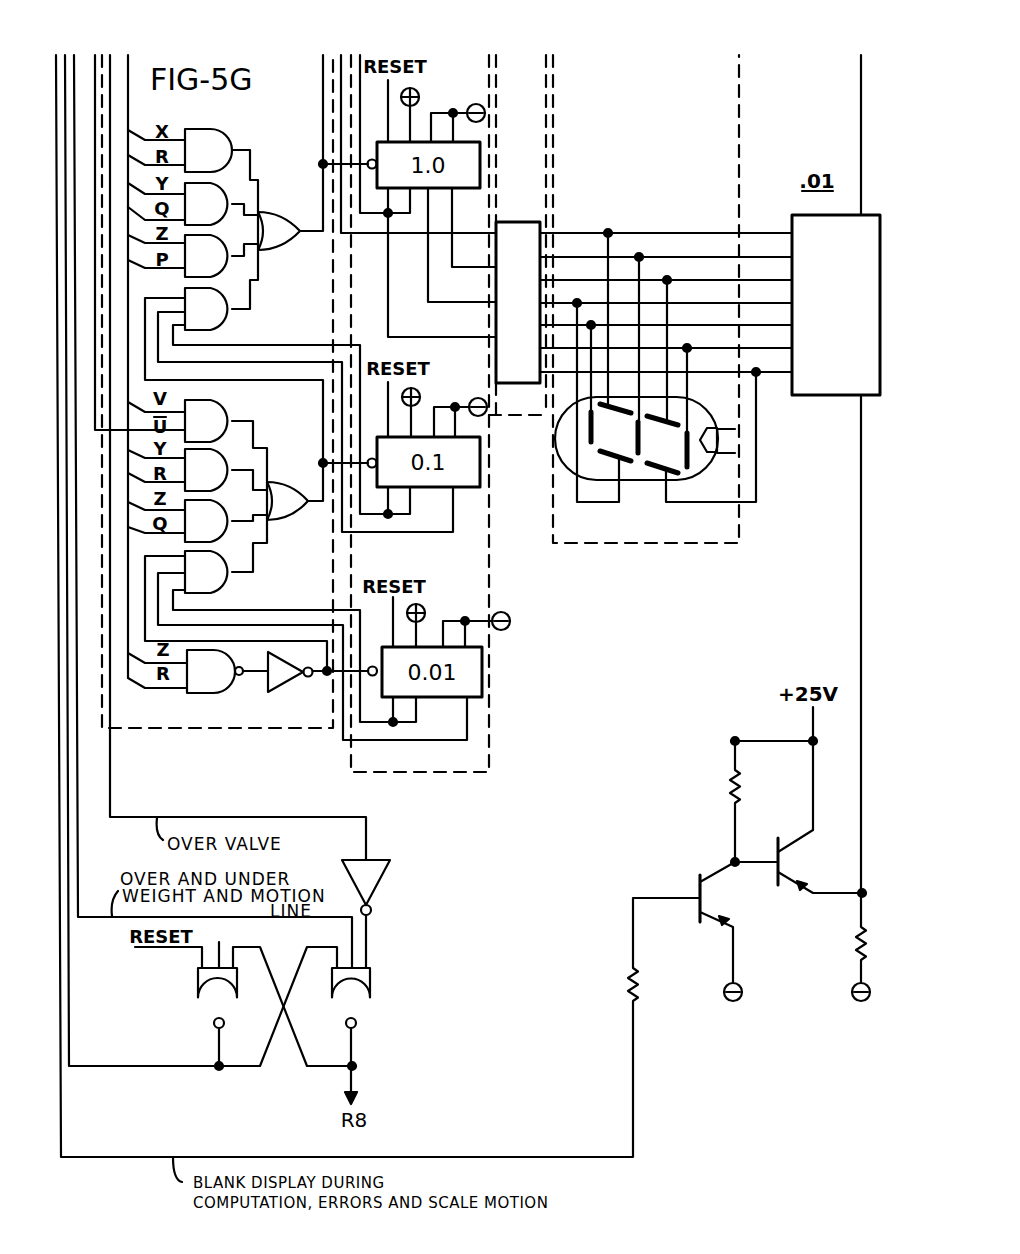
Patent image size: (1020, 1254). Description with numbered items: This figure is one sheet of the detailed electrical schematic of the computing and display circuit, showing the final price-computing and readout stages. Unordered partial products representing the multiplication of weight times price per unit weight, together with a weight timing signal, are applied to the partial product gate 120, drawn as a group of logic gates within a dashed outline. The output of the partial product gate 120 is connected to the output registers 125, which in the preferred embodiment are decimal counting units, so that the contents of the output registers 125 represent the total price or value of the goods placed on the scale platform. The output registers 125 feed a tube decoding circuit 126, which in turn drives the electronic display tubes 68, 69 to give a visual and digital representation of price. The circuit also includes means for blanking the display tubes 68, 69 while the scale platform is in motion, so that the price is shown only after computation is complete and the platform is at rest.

The partial product gate 120 is at (252, 728).
The output registers 125 is at (447, 772).
The tube decoding circuit 126 is at (517, 415).
The electronic display tube 68 is at (657, 543).
The electronic display tube 69 is at (646, 299).